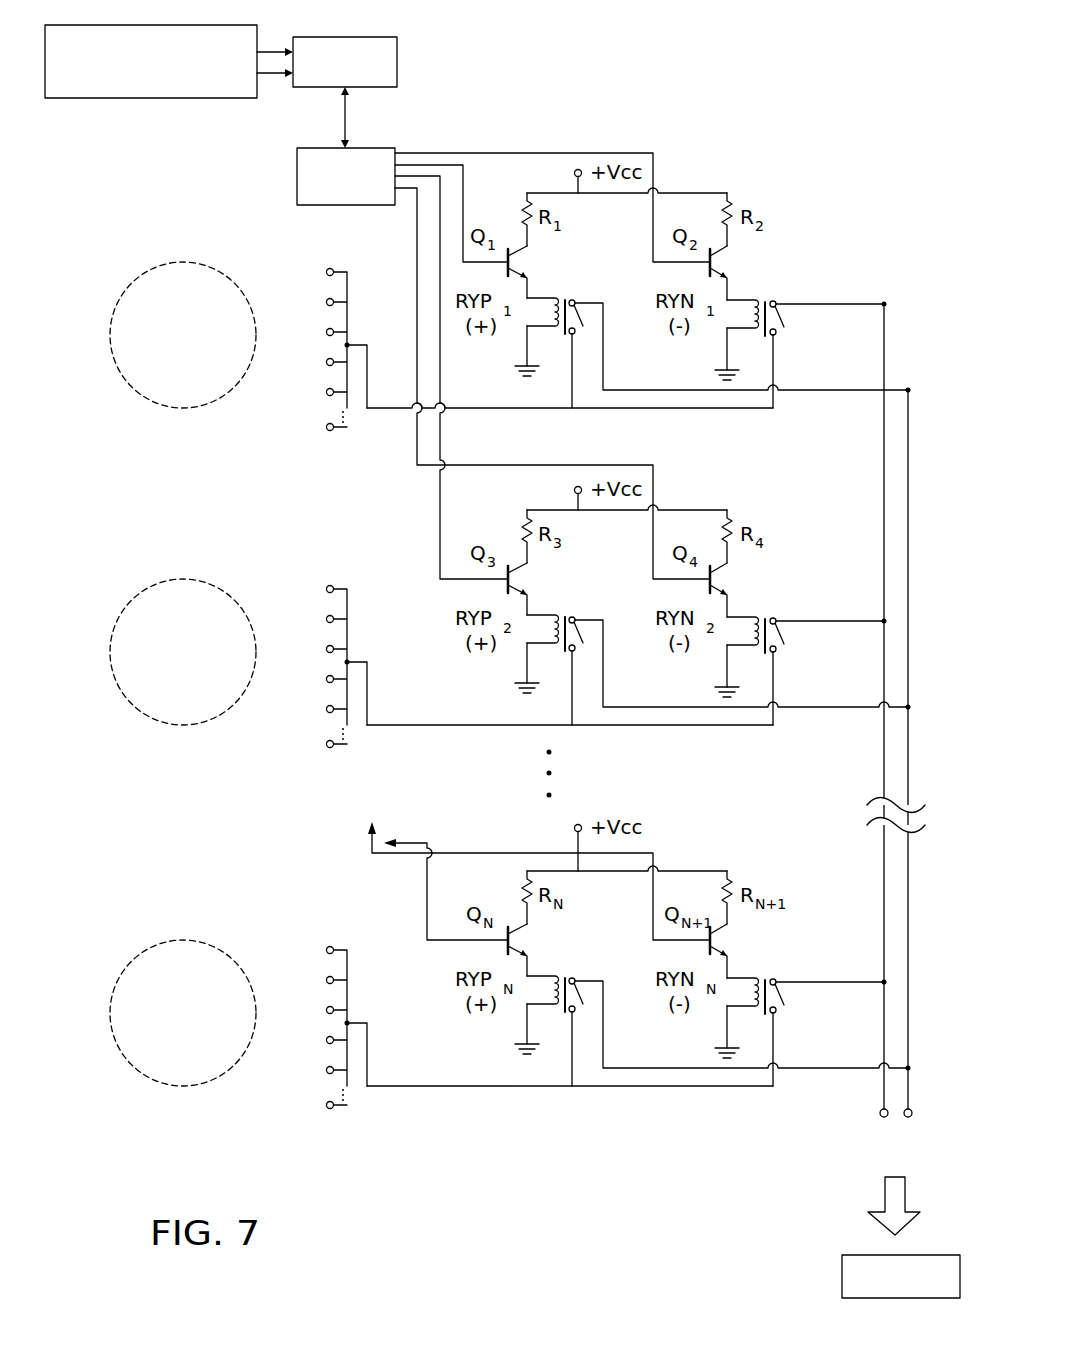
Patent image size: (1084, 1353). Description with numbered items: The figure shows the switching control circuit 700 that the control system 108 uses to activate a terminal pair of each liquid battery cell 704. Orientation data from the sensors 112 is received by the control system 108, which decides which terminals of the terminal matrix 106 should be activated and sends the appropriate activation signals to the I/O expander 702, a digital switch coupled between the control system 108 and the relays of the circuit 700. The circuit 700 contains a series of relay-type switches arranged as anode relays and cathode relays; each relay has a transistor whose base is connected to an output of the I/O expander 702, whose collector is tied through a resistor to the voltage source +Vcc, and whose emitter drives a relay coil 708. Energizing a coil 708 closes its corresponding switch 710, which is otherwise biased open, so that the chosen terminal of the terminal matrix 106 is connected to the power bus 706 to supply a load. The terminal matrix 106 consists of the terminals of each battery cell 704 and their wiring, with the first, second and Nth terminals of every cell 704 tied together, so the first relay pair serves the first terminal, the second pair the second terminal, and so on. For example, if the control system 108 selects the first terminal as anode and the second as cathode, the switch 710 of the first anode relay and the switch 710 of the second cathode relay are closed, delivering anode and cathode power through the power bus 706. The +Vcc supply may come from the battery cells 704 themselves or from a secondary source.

The switching control circuit 700 is at (675, 61).
The sensors 112 is at (152, 100).
The control system 108 is at (320, 77).
The I/O expander 702 is at (320, 192).
The liquid battery cell 704 is at (162, 264).
The terminal matrix 106 is at (345, 270).
The relay coil 708 is at (552, 297).
The switch 710 is at (586, 316).
The power bus 706 is at (840, 1174).